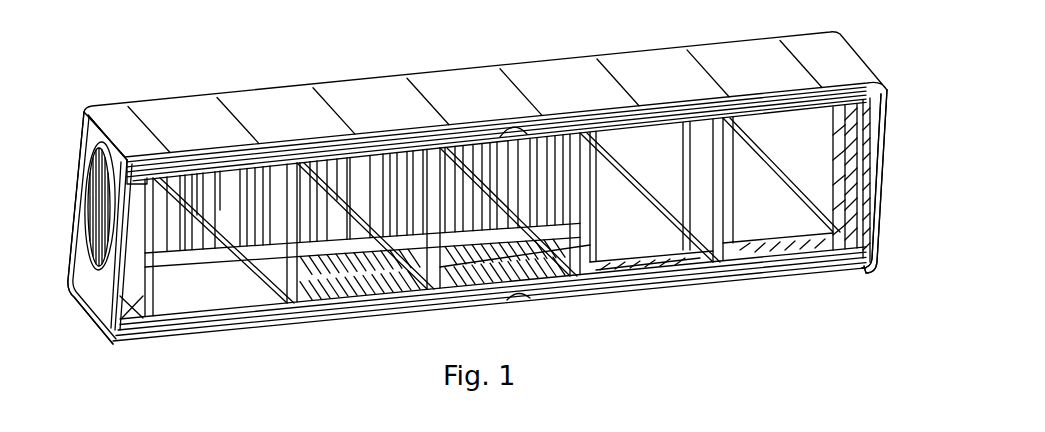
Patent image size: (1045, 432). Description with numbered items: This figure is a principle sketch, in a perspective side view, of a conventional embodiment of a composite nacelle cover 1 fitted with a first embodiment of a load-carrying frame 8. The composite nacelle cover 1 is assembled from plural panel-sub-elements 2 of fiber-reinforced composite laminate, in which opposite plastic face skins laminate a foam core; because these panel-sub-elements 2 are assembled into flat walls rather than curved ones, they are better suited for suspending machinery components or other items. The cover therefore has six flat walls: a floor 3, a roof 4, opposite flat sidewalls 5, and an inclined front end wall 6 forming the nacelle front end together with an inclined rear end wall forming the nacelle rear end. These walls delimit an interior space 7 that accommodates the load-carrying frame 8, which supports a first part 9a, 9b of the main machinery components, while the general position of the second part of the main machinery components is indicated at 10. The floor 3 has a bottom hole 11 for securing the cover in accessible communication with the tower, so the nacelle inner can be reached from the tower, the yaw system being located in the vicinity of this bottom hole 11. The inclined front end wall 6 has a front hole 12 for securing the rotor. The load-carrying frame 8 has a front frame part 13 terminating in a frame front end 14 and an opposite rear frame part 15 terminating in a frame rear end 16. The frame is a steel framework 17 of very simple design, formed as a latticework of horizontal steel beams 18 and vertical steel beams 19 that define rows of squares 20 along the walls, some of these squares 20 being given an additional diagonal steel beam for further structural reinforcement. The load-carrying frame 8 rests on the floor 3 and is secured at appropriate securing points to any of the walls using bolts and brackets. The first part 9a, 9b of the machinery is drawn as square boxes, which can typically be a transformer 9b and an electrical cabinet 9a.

The composite nacelle cover 1 is at (164, 89).
The panel-sub-elements 2 is at (467, 92).
The floor 3 is at (313, 296).
The roof 4 is at (353, 103).
The sidewalls 5 is at (347, 293).
The inclined front end wall 6 is at (103, 305).
The interior space 7 is at (883, 133).
The load-carrying frame 8 is at (667, 277).
The electrical cabinet 9a is at (777, 230).
The transformer 9b is at (655, 285).
The second part of the main machinery components 10 is at (238, 233).
The bottom hole 11 is at (213, 303).
The front hole 12 is at (86, 216).
The front frame part 13 is at (270, 313).
The frame front end 14 is at (115, 318).
The rear frame part 15 is at (647, 233).
The frame rear end 16 is at (862, 213).
The steel framework 17 is at (638, 128).
The horizontal steel beams 18 is at (487, 293).
The vertical steel beams 19 is at (287, 175).
The squares 20 is at (637, 192).